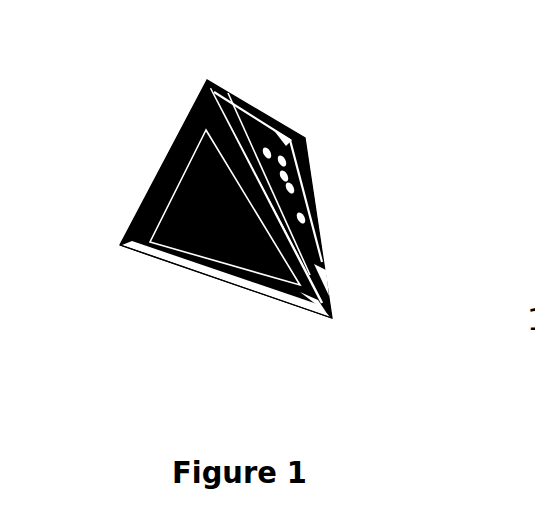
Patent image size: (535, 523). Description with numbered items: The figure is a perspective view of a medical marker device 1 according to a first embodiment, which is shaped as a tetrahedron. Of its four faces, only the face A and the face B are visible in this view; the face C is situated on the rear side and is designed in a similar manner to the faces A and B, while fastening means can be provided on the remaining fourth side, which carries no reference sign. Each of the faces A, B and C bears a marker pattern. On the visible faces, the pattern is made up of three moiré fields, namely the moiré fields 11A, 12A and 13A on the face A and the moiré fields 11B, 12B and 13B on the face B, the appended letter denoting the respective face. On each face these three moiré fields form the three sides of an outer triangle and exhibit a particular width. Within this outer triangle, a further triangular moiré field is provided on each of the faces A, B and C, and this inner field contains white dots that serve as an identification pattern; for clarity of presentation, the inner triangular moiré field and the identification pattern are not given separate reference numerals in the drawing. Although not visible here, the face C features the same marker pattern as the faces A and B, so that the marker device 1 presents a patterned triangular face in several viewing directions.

The marker device 1 is at (233, 196).
The face A is at (182, 233).
The face B is at (321, 212).
The face C is at (166, 106).
The moiré field 11A is at (295, 286).
The moiré field 11B is at (286, 128).
The moiré field 12A is at (176, 260).
The moiré field 12B is at (325, 236).
The moiré field 13A is at (135, 211).
The moiré field 13B is at (325, 277).